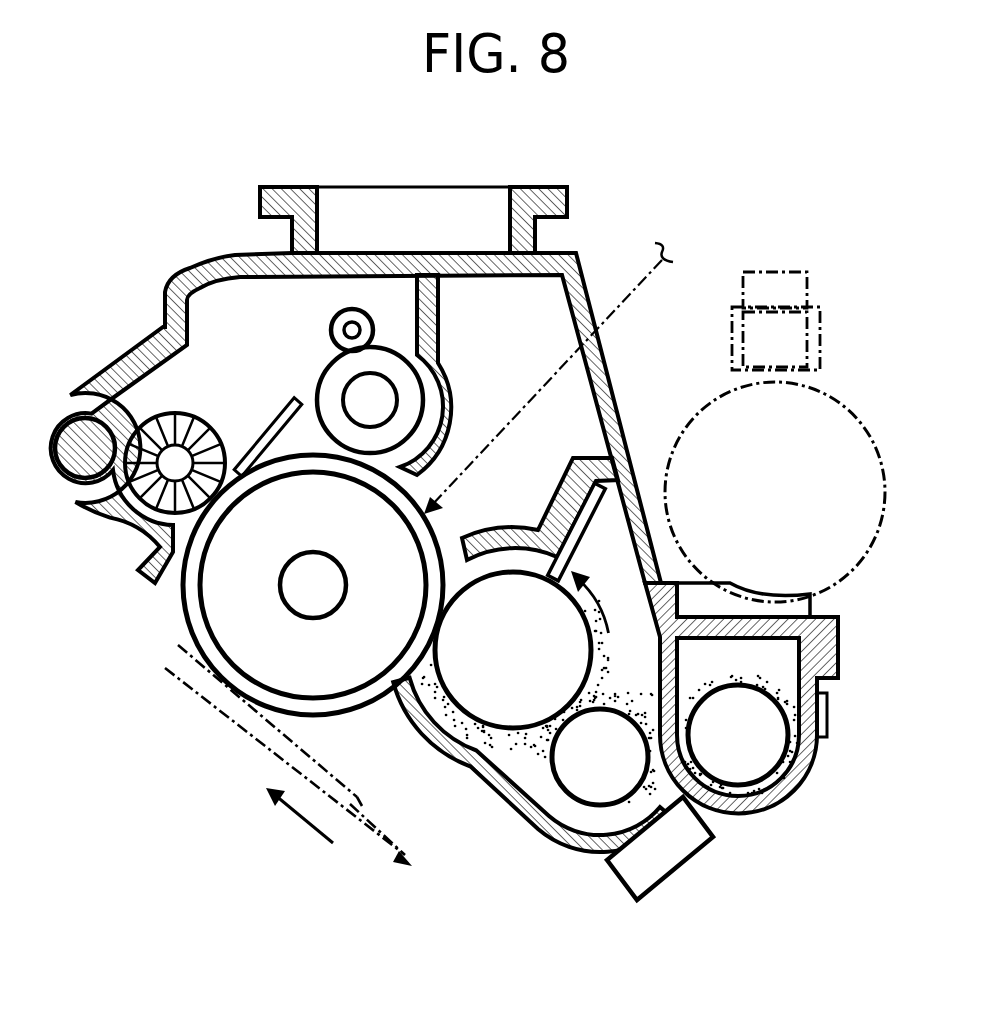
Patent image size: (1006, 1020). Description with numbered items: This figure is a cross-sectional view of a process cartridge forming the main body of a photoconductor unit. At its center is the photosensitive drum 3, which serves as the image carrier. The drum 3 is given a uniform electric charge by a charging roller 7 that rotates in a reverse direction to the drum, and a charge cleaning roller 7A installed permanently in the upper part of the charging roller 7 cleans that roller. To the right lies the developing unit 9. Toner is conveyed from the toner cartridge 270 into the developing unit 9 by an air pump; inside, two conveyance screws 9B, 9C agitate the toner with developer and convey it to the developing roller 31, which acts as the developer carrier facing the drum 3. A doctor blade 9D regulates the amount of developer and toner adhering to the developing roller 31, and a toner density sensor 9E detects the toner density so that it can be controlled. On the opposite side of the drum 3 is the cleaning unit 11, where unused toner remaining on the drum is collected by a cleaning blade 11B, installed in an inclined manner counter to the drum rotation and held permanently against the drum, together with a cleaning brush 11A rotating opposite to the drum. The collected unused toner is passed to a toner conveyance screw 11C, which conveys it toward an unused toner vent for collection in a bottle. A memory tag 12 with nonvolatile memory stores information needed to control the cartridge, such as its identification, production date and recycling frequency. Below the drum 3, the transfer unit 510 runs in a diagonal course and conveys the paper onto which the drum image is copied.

The photosensitive drum 3 is at (183, 610).
The charging roller 7 is at (330, 366).
The charge cleaning roller 7A is at (324, 314).
The developing unit 9 is at (646, 703).
The conveyance screw 9B is at (740, 783).
The conveyance screw 9C is at (573, 783).
The doctor blade 9D is at (582, 520).
The toner density sensor 9E is at (680, 867).
The cleaning unit 11 is at (139, 316).
The cleaning brush 11A is at (150, 427).
The cleaning blade 11B is at (268, 436).
The toner conveyance screw 11C is at (80, 425).
The memory tag 12 is at (828, 714).
The developing roller 31 is at (477, 707).
The toner cartridge 270 is at (890, 490).
The transfer unit 510 is at (377, 852).